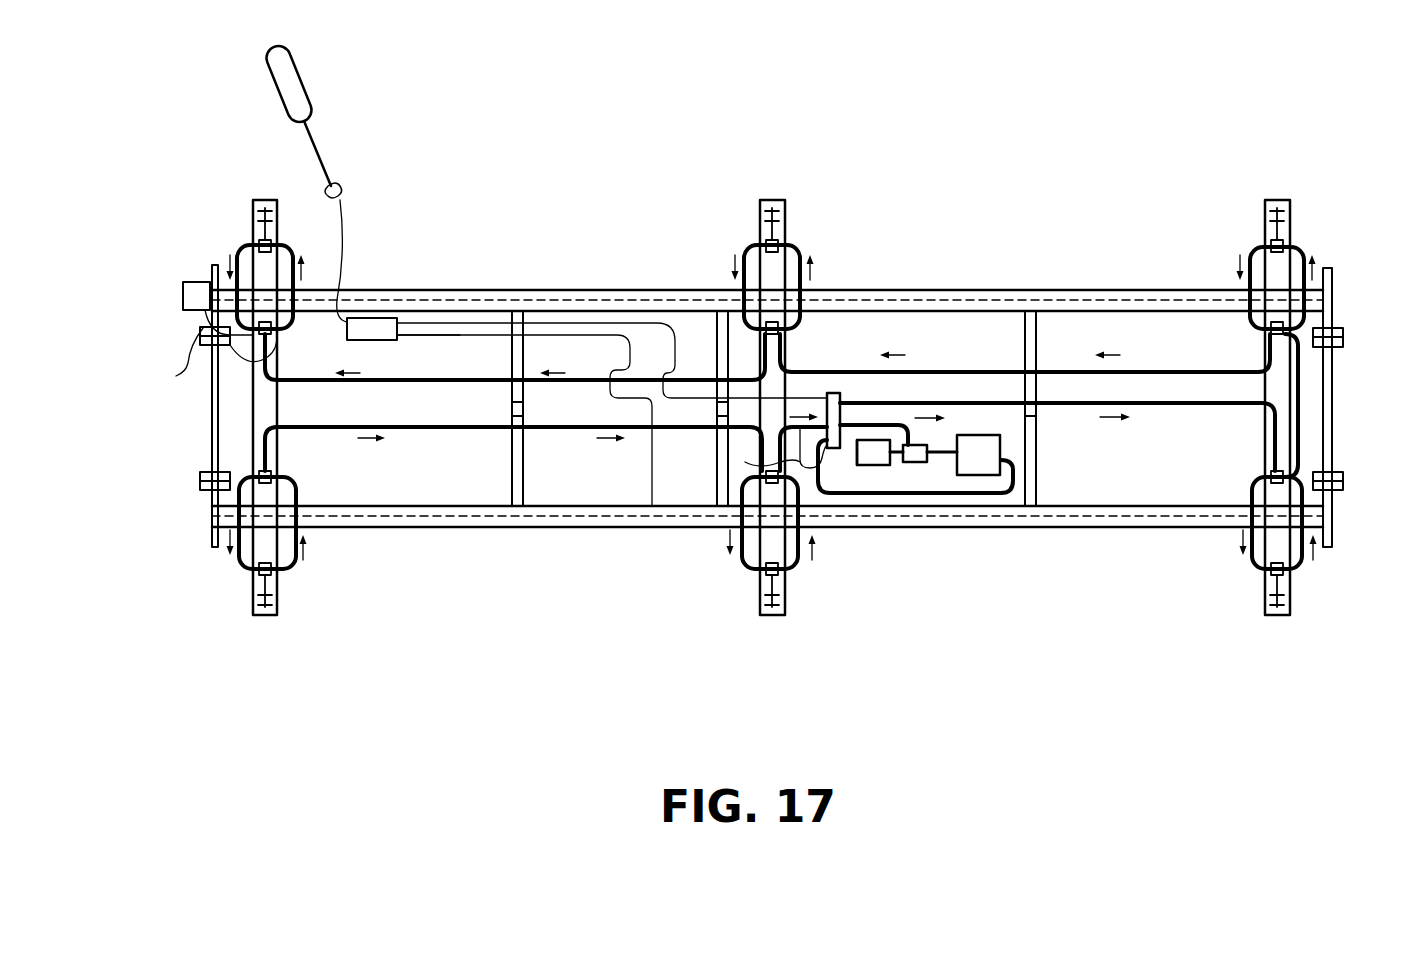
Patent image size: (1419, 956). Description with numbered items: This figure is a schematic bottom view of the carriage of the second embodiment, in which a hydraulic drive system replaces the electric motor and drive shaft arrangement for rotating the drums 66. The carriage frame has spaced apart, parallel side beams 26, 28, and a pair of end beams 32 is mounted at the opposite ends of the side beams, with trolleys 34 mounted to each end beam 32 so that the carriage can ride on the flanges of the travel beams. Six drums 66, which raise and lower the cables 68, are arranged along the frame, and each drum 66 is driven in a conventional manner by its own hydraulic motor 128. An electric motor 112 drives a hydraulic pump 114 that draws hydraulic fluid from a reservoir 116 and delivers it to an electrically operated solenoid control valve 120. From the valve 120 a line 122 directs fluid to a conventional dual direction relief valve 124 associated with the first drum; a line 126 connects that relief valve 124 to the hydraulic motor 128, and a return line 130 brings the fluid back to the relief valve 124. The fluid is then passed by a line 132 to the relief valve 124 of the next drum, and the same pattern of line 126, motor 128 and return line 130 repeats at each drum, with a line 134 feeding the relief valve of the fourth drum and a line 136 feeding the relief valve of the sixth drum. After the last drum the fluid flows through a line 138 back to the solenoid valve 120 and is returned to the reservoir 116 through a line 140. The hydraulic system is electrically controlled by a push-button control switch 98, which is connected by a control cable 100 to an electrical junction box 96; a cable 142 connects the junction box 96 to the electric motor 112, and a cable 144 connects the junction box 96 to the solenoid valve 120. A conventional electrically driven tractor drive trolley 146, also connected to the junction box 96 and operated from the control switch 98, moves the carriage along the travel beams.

The frame side beam 26 is at (935, 290).
The frame side beam 28 is at (610, 528).
The end beam 32 is at (1332, 416).
The trolley 34 is at (200, 337).
The drum 66 is at (253, 213).
The cable 68 is at (772, 607).
The electrical junction box 96 is at (380, 318).
The control switch 98 is at (293, 95).
The control cable 100 is at (343, 200).
The electric motor 112 is at (880, 462).
The hydraulic pump 114 is at (918, 462).
The reservoir 116 is at (990, 466).
The hydraulic control valve 120 is at (840, 402).
The line 122 is at (1145, 404).
The dual direction relief valve 124 is at (278, 338).
The line 126 is at (285, 250).
The hydraulic motor 128 is at (259, 246).
The return line 130 is at (238, 262).
The line 132 is at (213, 395).
The line 134 is at (445, 380).
The line 136 is at (452, 428).
The line 138 is at (822, 480).
The line 140 is at (960, 493).
The cable 142 is at (462, 335).
The cable 144 is at (188, 363).
The tractor drive trolley 146 is at (183, 300).